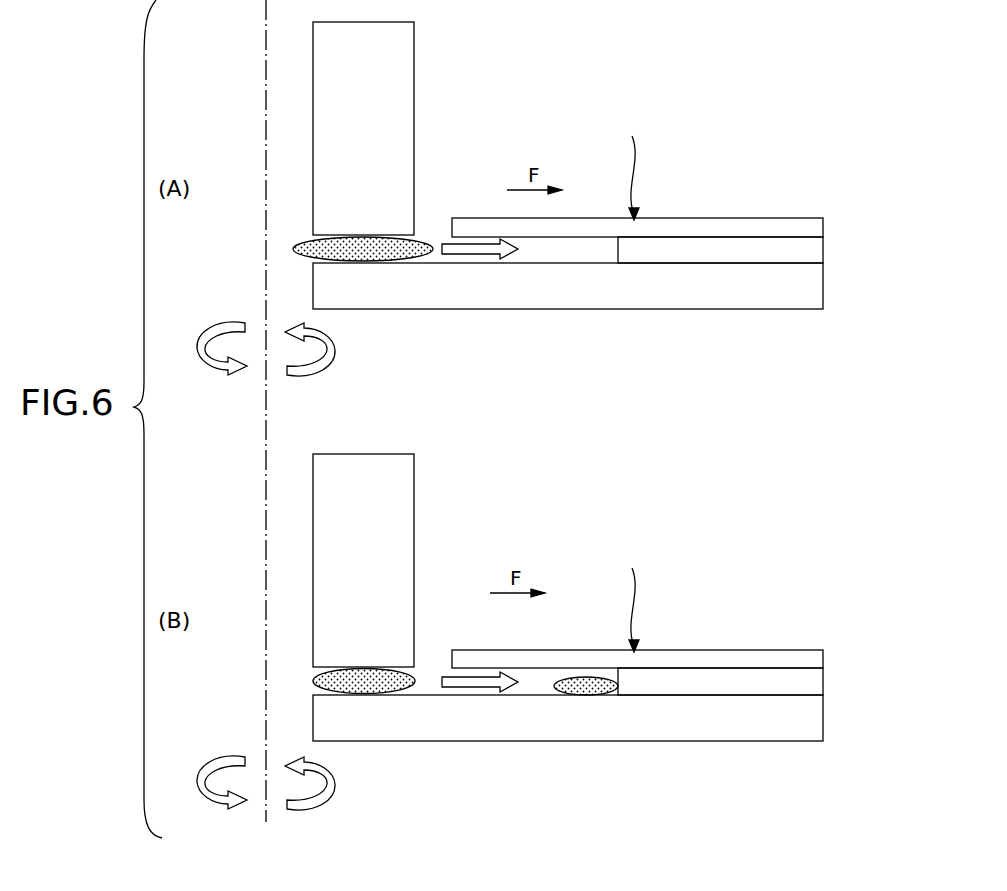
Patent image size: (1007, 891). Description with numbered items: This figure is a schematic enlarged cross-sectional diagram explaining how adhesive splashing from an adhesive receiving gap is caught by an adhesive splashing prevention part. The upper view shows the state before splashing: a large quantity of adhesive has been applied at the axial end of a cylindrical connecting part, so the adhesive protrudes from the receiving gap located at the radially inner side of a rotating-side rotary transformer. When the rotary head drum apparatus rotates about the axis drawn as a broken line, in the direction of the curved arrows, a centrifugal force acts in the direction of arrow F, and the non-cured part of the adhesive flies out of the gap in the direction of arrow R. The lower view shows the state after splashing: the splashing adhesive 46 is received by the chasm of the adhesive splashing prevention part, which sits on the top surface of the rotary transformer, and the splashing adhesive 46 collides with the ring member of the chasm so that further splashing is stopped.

The splashing adhesive 46 is at (584, 683).